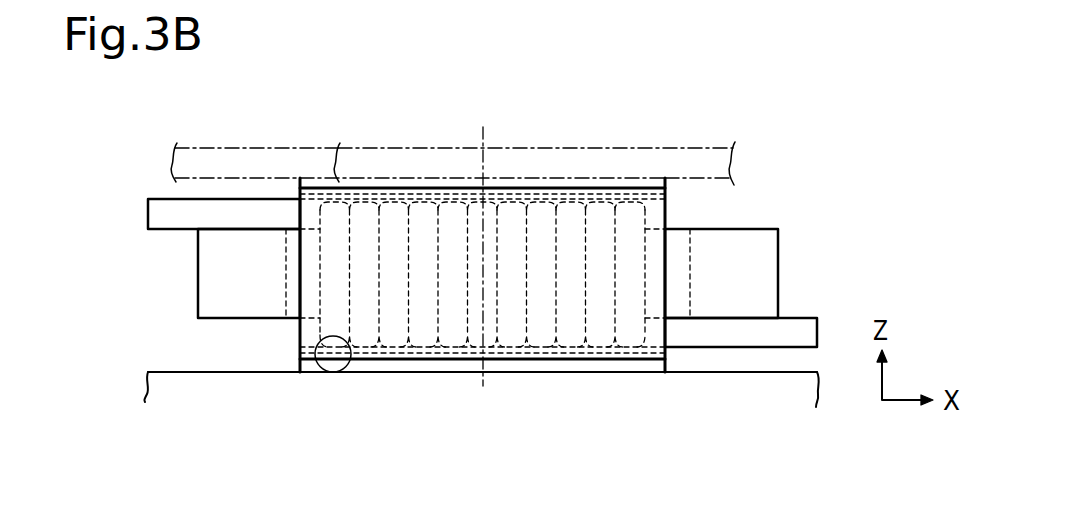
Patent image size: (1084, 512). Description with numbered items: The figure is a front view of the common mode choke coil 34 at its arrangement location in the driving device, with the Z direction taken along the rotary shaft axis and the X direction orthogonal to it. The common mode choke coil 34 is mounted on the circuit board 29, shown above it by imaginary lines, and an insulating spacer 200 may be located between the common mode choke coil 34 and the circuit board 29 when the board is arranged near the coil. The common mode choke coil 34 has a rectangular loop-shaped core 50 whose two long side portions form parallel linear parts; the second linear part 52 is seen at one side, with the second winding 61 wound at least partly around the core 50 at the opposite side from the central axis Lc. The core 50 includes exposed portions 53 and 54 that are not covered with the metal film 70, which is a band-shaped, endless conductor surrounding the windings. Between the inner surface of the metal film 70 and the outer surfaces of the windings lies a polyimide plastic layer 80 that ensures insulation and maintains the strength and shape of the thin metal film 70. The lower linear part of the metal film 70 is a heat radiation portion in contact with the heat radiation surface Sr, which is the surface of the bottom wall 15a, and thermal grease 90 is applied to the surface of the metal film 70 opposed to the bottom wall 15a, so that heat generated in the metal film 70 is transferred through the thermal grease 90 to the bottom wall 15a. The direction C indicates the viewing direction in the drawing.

The insulating spacer 200 is at (340, 148).
The circuit board 29 is at (687, 147).
The common mode choke coil 34 is at (642, 172).
The metal film 70 is at (573, 188).
The plastic layer 80 is at (668, 217).
The thermal grease 90 is at (617, 372).
The exposed portion 53 is at (202, 268).
The second winding 61 is at (303, 253).
The core 50 is at (766, 270).
The second linear part 52 is at (680, 228).
The exposed portion 54 is at (765, 277).
The bottom wall 15a is at (177, 371).
The central axis Lc is at (483, 142).
The heat radiation surface Sr is at (315, 371).
The direction C is at (483, 386).